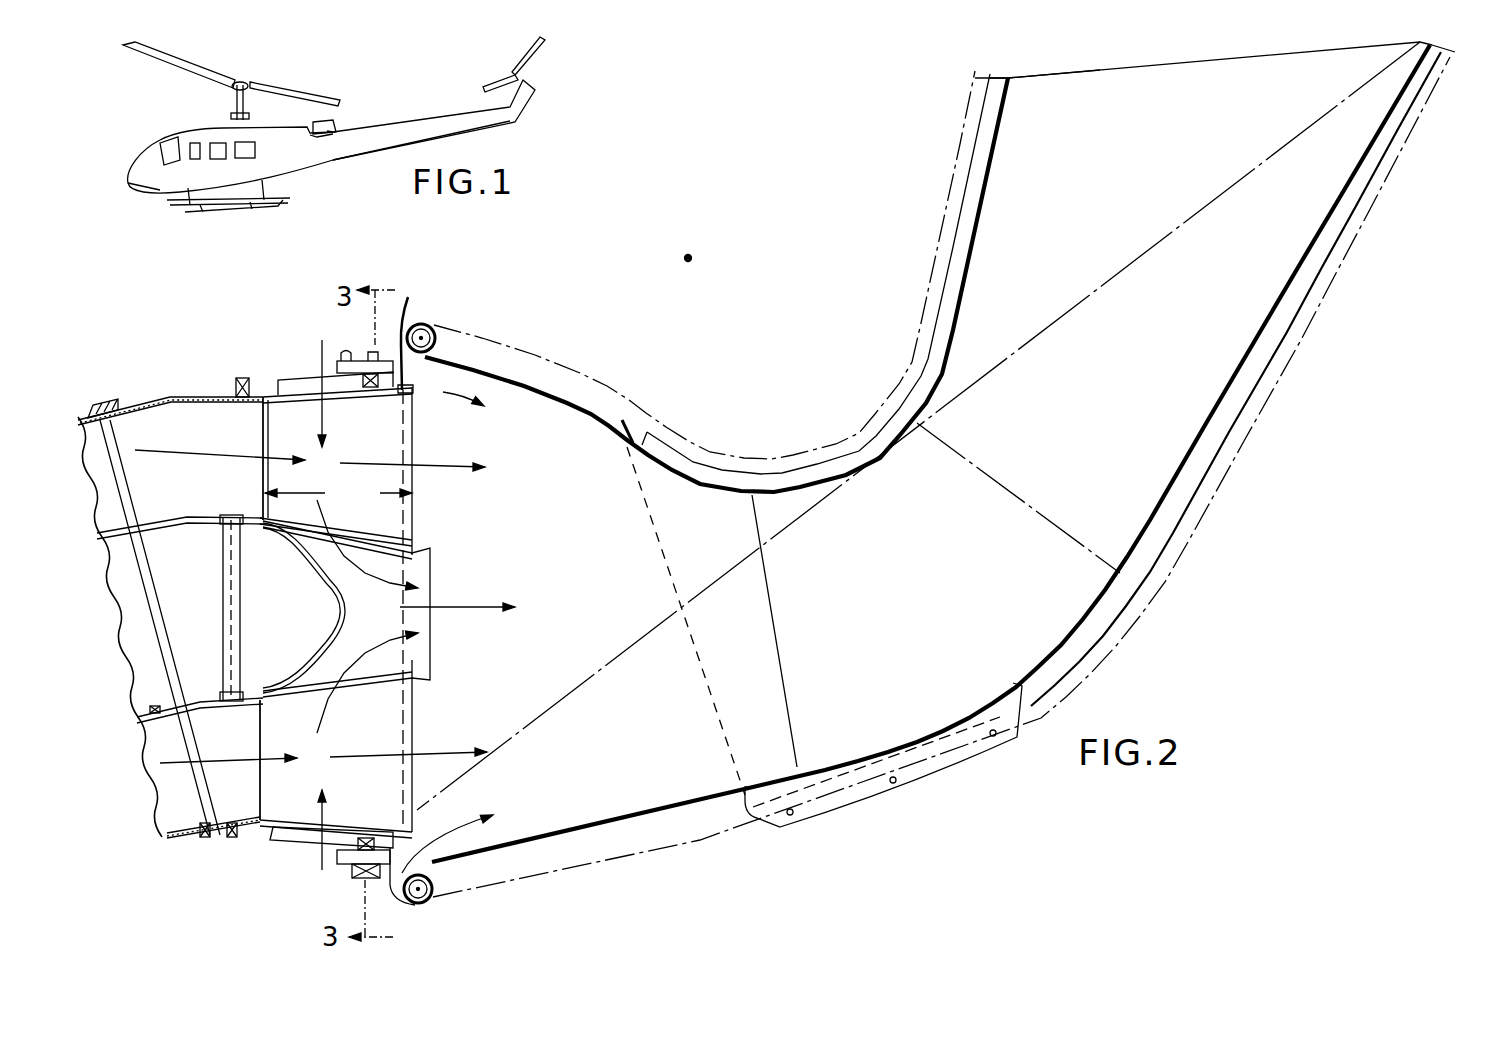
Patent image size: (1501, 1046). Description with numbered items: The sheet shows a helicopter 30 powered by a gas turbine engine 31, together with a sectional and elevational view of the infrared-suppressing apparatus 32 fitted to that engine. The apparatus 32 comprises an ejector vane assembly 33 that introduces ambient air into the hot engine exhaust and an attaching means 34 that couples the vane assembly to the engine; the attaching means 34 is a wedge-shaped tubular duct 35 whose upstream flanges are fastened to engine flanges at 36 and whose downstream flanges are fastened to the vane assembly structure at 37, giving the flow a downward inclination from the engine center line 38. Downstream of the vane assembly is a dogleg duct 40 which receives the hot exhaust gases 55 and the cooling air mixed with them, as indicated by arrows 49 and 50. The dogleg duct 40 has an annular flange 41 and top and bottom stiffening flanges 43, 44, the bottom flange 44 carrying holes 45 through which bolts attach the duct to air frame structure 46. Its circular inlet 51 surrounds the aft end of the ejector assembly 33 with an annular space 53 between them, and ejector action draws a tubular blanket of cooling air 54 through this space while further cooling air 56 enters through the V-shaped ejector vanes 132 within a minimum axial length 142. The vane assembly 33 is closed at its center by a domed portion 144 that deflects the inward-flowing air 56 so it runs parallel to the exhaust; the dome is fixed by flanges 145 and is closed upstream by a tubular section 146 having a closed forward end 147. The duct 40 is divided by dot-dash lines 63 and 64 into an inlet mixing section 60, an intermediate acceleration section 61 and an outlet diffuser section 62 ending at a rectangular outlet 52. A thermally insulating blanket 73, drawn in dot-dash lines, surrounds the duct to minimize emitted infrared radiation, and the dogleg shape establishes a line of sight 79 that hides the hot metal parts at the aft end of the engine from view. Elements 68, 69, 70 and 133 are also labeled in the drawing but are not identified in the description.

In FIG. 1, the helicopter 30 is at (300, 168).
In FIG. 1, the gas turbine engine 31 is at (277, 127).
In FIG. 1, the dogleg duct 40 is at (317, 137).
In FIG. 2, the dogleg duct 40 is at (793, 487).
In FIG. 1, the air frame structure 46 is at (327, 131).
In FIG. 2, the apparatus for suppressing infrared radiation 32 is at (444, 312).
In FIG. 2, the ejector vane assembly 33 is at (302, 367).
In FIG. 2, the attaching means 34 is at (176, 380).
In FIG. 2, the tubular duct 35 is at (157, 397).
In FIG. 2, the flange attachment at engine aft end 36 is at (99, 387).
In FIG. 2, the flange attachment to ejector vane assembly 37 is at (242, 380).
In FIG. 2, the engine center line 38 is at (140, 618).
In FIG. 2, the annular flange 41 is at (635, 425).
In FIG. 2, the top stiffening flange 43 is at (938, 315).
In FIG. 2, the bottom stiffening flange 44 is at (1000, 737).
In FIG. 2, the holes 45 is at (895, 785).
In FIG. 2, the arrows 49 is at (448, 605).
In FIG. 2, the arrows 50 is at (450, 466).
In FIG. 2, the circular inlet 51 is at (418, 322).
In FIG. 2, the rectangular outlet 52 is at (1003, 75).
In FIG. 2, the annular space 53 is at (396, 340).
In FIG. 2, the arrows 54 is at (443, 392).
In FIG. 2, the reference arrows 55 is at (205, 455).
In FIG. 2, the arrows 56 is at (325, 414).
In FIG. 2, the inlet mixing section 60 is at (583, 594).
In FIG. 2, the intermediate acceleration section 61 is at (916, 619).
In FIG. 2, the outlet diffuser section 62 is at (1176, 317).
In FIG. 2, the dot-dash line 63 is at (768, 600).
In FIG. 2, the dot-dash line 64 is at (1022, 499).
In FIG. 2, the screen edge 68 is at (1003, 103).
In FIG. 2, the outer screen layer 69 is at (1400, 92).
In FIG. 2, the reference point 70 is at (688, 258).
In FIG. 2, the thermal insulation blanket 73 is at (1262, 425).
In FIG. 2, the line of sight 79 is at (1153, 243).
In FIG. 2, the V-shaped ejector vanes 132 is at (280, 417).
In FIG. 2, the duct wall 133 is at (264, 475).
In FIG. 2, the minimum axial length 142 is at (338, 493).
In FIG. 2, the domed portion 144 is at (345, 602).
In FIG. 2, the flanges 145 is at (198, 608).
In FIG. 2, the tubular section 146 is at (195, 688).
In FIG. 2, the closed forward end 147 is at (207, 620).